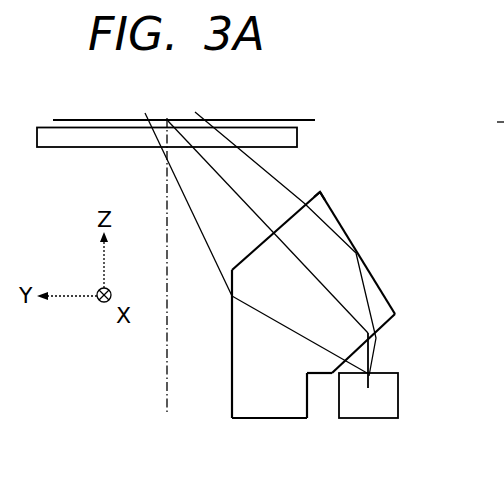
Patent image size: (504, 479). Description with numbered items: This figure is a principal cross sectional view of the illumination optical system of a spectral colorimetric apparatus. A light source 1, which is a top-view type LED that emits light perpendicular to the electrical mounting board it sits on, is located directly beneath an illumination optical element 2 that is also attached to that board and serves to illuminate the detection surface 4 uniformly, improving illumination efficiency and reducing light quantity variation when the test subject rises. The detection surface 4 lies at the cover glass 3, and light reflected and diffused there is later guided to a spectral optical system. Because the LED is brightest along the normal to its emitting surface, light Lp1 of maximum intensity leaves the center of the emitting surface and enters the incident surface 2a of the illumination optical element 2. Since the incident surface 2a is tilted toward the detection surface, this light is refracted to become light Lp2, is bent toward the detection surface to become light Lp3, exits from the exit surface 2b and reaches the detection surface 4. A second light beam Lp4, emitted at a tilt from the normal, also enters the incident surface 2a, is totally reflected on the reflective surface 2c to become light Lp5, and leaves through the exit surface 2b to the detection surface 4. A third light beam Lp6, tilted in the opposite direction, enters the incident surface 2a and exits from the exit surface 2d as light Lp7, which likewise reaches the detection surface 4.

The light source 1 is at (399, 400).
The illumination optical element 2 is at (321, 282).
The incident surface 2a is at (395, 320).
The exit surface 2b is at (307, 193).
The reflective surface 2c is at (363, 256).
The exit surface 2d is at (232, 335).
The cover glass 3 is at (275, 133).
The detection surface 4 is at (168, 120).
The light Lp1 is at (367, 390).
The light Lp2 is at (294, 262).
The light Lp3 is at (234, 190).
The light beam Lp4 is at (380, 347).
The light Lp5 is at (319, 215).
The light beam Lp6 is at (352, 363).
The light Lp7 is at (195, 222).